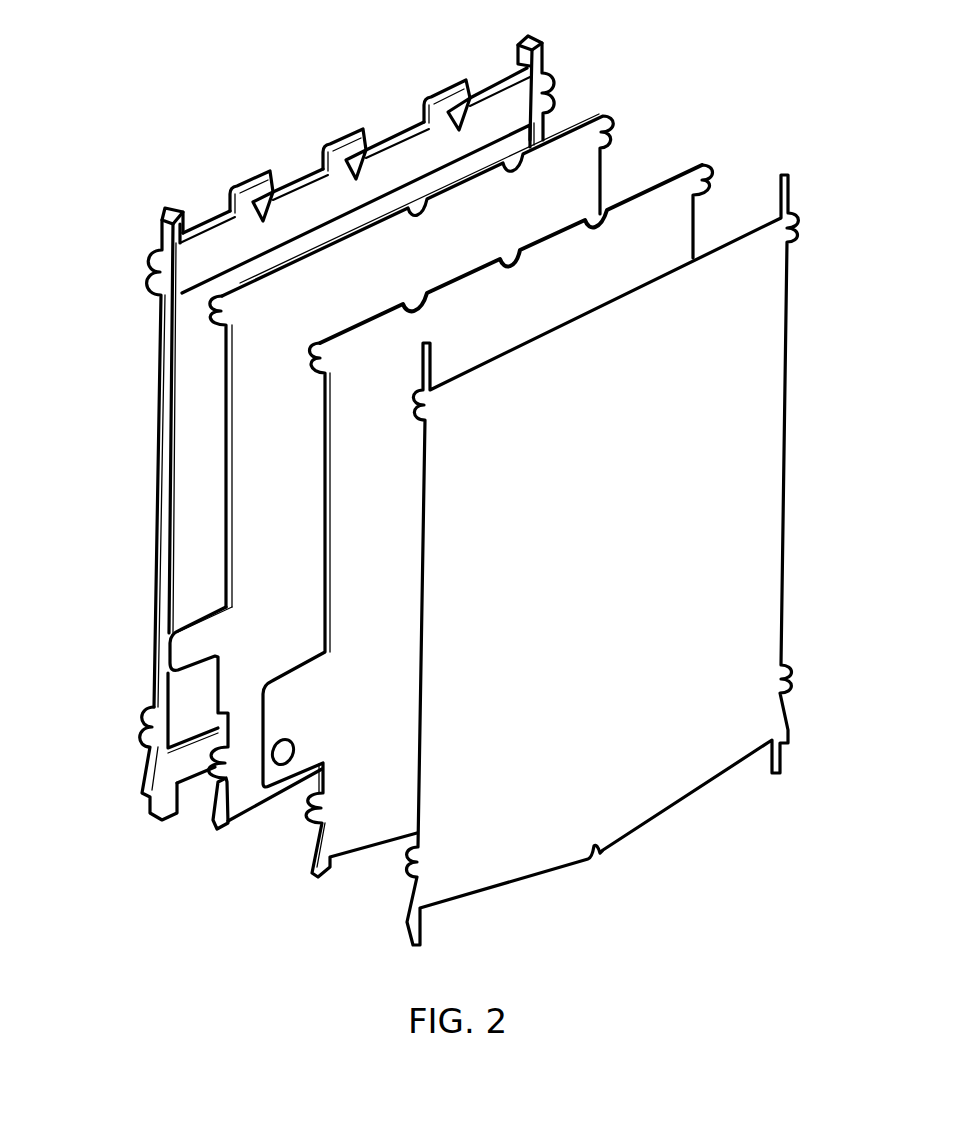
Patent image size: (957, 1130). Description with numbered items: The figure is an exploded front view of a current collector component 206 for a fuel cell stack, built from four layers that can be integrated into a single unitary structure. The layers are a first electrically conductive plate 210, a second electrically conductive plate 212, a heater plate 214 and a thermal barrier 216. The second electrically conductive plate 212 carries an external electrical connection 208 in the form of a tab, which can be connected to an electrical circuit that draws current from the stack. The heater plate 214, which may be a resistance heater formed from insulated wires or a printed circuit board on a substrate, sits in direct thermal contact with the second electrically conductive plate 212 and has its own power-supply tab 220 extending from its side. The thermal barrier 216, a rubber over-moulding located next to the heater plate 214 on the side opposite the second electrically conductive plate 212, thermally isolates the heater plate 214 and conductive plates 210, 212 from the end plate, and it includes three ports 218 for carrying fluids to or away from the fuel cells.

The current collector component 206 is at (100, 262).
The external electrical connection 208 is at (290, 770).
The first electrically conductive plate 210 is at (786, 296).
The second electrically conductive plate 212 is at (693, 218).
The heater plate 214 is at (600, 165).
The thermal barrier 216 is at (543, 76).
The ports 218 is at (452, 96).
The tab 220 is at (192, 677).